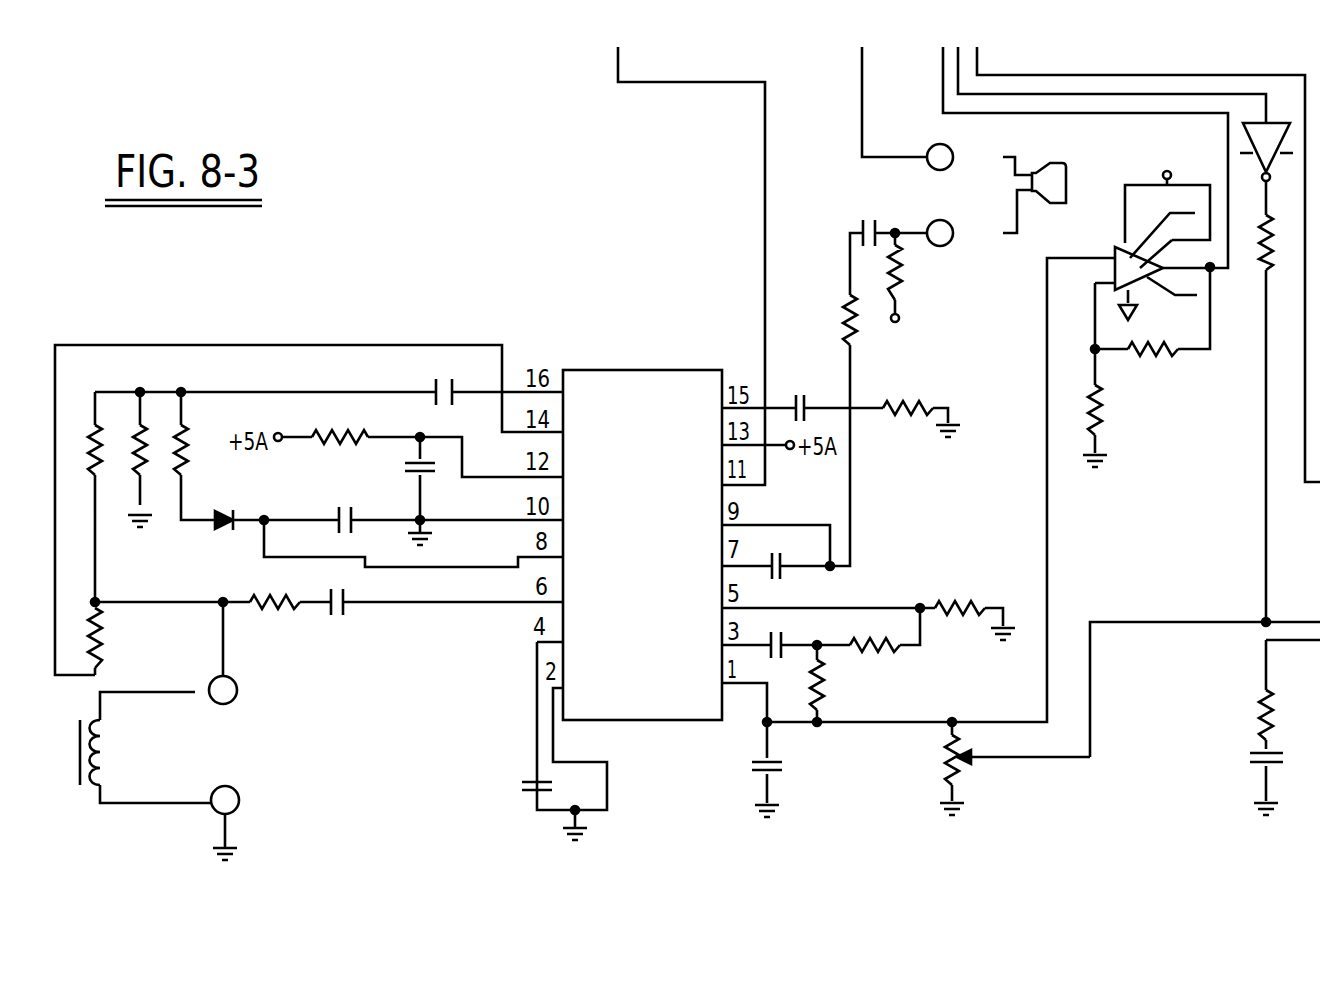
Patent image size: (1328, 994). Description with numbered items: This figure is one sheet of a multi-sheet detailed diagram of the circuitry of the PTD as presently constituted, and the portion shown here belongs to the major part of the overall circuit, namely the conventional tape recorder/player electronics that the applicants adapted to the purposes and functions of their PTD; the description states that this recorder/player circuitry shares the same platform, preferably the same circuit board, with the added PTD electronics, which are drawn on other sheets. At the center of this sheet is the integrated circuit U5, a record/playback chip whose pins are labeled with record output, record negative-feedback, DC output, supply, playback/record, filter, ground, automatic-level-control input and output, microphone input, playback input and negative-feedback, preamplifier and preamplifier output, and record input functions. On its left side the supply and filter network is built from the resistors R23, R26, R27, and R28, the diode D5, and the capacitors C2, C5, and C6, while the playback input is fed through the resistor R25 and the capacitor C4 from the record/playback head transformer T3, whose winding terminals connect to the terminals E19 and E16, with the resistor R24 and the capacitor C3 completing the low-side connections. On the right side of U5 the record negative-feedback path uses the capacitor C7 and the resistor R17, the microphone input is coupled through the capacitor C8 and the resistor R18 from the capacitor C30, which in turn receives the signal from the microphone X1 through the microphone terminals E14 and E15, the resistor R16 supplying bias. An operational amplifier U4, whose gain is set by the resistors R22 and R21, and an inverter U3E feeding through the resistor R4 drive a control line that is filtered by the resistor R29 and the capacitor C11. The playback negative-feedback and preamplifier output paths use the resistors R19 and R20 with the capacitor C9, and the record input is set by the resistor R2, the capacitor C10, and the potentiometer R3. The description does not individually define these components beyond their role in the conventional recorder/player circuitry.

The record/playback amplifier IC U5 is at (642, 530).
The resistor R23 is at (112, 438).
The resistor R26 is at (155, 463).
The resistor R27 is at (201, 438).
The resistor R24 is at (116, 641).
The resistor R25 is at (275, 618).
The resistor R28 is at (340, 423).
The diode D5 is at (220, 503).
The capacitor C2 is at (440, 378).
The capacitor C6 is at (336, 502).
The capacitor C5 is at (404, 464).
The capacitor C4 is at (341, 617).
The capacitor C3 is at (550, 781).
The terminal E19 is at (245, 654).
The terminal E16 is at (246, 823).
The record/playback head transformer T3 is at (192, 747).
The capacitor C7 is at (801, 391).
The resistor R17 is at (907, 391).
The capacitor C8 is at (779, 552).
The resistor R18 is at (828, 320).
The capacitor C30 is at (870, 220).
The resistor R16 is at (910, 294).
The microphone terminal E14 is at (947, 141).
The microphone terminal E15 is at (950, 218).
The microphone X1 is at (1056, 183).
The operational amplifier U4 is at (1085, 183).
The resistor R22 is at (1162, 364).
The resistor R21 is at (1118, 410).
The inverter U3E is at (1266, 154).
The resistor R4 is at (1280, 242).
The resistor R29 is at (1243, 715).
The capacitor C11 is at (1247, 755).
The resistor R19 is at (960, 591).
The resistor R20 is at (876, 632).
The capacitor C9 is at (782, 635).
The resistor R2 is at (833, 683).
The capacitor C10 is at (788, 766).
The potentiometer R3 is at (937, 768).